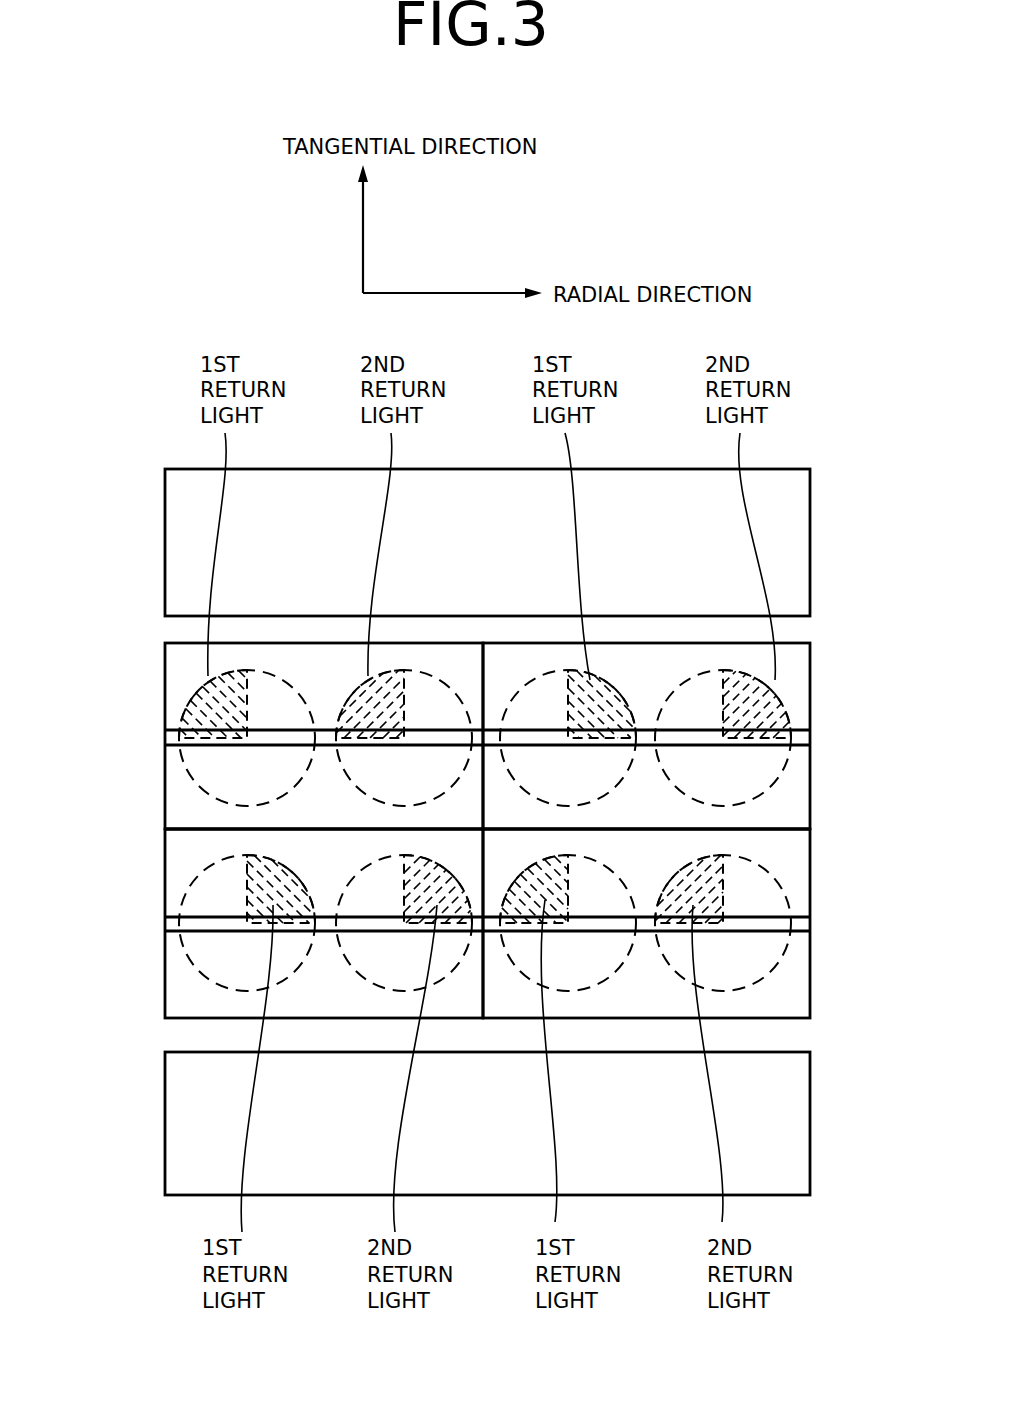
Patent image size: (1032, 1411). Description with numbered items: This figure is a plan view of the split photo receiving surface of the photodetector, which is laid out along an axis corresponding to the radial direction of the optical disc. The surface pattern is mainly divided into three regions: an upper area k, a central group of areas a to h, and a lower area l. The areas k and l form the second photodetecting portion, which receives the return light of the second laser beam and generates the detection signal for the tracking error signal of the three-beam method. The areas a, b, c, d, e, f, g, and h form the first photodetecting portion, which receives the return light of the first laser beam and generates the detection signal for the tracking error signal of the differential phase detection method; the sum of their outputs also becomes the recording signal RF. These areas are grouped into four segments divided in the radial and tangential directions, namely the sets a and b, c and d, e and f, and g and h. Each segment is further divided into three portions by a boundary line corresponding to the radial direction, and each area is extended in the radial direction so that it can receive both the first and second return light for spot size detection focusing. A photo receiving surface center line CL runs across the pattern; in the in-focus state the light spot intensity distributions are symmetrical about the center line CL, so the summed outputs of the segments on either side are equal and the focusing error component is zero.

The area a is at (172, 677).
The area b is at (168, 737).
The area c is at (172, 866).
The area d is at (168, 925).
The area e is at (803, 676).
The area f is at (803, 740).
The area g is at (803, 868).
The area h is at (803, 923).
The area k is at (803, 529).
The area l is at (803, 1113).
The photo receiving surface center line CL is at (810, 829).